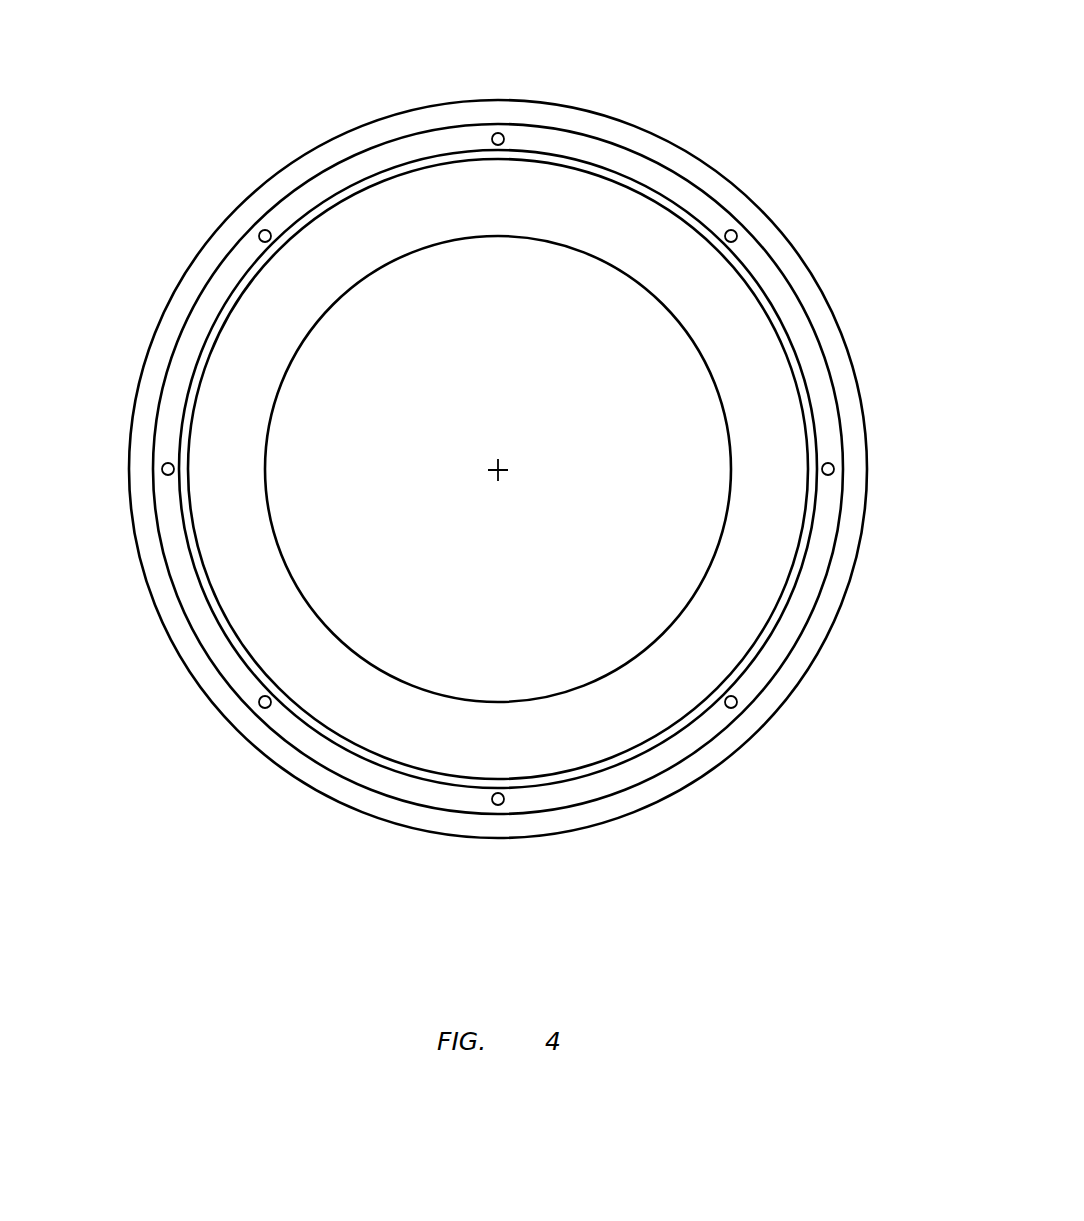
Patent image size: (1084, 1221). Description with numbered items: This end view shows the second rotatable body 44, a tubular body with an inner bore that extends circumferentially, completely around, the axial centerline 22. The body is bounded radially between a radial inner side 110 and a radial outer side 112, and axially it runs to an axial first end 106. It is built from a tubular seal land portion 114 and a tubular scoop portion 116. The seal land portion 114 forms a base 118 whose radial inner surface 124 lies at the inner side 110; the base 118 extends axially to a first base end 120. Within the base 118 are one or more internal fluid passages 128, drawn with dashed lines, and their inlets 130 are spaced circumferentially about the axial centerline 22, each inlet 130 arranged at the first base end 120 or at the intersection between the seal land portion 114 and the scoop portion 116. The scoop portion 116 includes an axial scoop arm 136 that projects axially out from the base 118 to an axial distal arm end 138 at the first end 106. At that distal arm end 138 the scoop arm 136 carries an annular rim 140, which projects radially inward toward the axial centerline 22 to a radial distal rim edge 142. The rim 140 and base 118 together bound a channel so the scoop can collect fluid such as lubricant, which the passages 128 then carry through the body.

The second rotatable body 44 is at (731, 106).
The radial outer side 112 is at (515, 428).
The scoop portion 116 is at (440, 103).
The axial scoop arm 136 is at (378, 133).
The axial first end 106 is at (498, 436).
The axial distal arm end 138 is at (318, 190).
The annular rim 140 is at (498, 469).
The radial distal rim edge 142 is at (270, 246).
The radial inner side 110 is at (506, 469).
The radial inner surface 124 is at (506, 469).
The seal land portion 114 is at (506, 469).
The first base end 120 is at (506, 469).
The base 118 is at (455, 242).
The axial centerline 22 is at (495, 481).
The internal fluid passages 128 is at (505, 476).
The inlet 130 is at (504, 132).